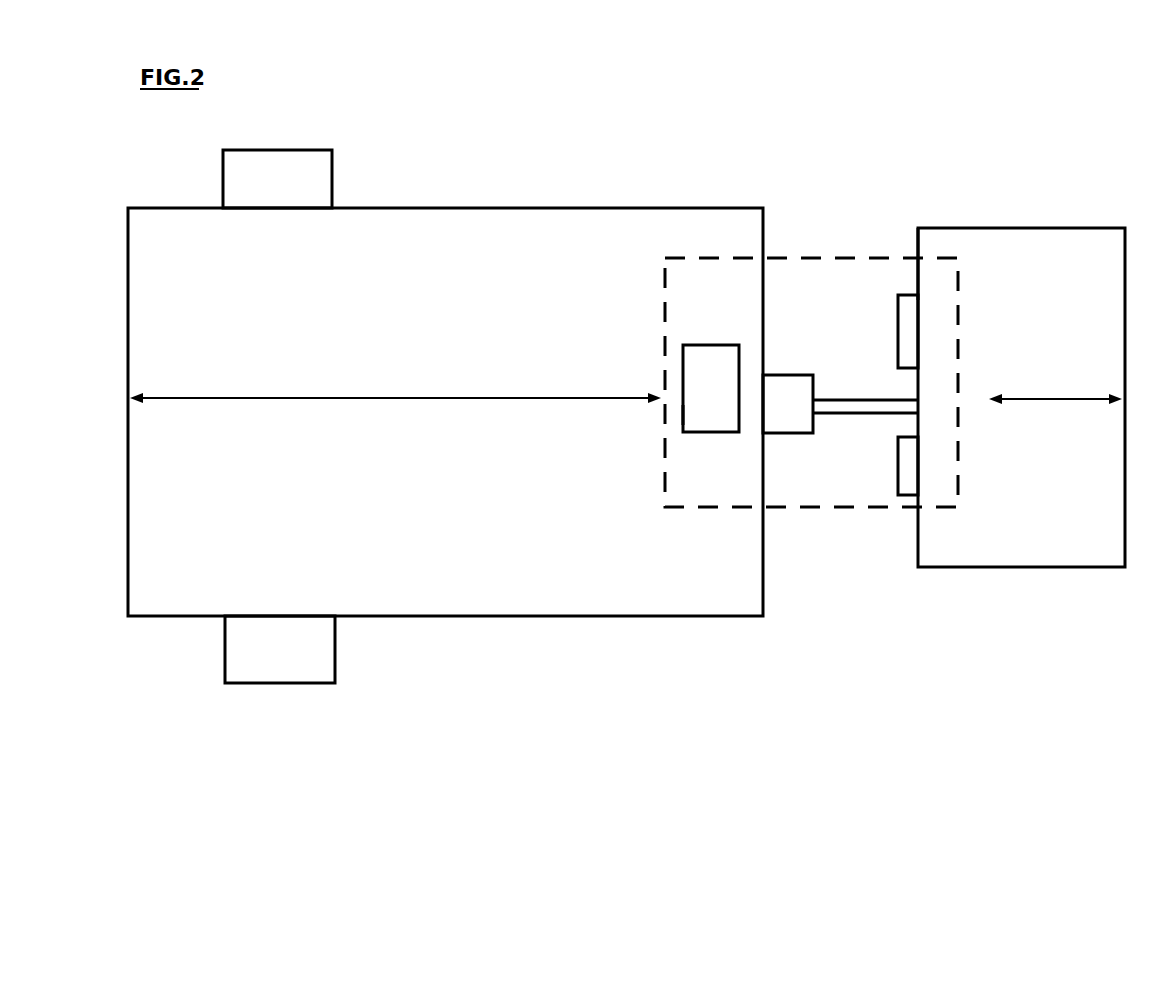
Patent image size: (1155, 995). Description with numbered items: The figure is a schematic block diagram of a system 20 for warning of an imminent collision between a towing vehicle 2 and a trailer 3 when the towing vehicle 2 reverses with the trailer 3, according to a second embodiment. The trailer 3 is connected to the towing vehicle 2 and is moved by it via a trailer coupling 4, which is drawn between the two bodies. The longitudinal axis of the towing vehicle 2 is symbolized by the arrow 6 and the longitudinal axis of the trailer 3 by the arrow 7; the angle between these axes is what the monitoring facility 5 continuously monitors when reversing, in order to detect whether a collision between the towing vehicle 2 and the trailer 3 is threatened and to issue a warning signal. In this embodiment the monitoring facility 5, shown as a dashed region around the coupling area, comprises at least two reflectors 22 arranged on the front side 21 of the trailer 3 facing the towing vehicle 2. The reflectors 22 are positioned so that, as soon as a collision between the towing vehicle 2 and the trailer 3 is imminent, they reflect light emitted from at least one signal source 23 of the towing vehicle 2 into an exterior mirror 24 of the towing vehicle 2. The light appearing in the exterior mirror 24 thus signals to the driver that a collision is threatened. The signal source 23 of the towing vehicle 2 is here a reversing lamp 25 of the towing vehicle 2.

The towing vehicle 2 is at (360, 206).
The trailer 3 is at (1007, 226).
The trailer coupling 4 is at (804, 445).
The monitoring facility 5 is at (679, 254).
The longitudinal axis of the towing vehicle 6 is at (395, 373).
The longitudinal axis of the trailer 7 is at (1055, 380).
The system 20 is at (830, 177).
The front side 21 is at (909, 226).
The reflectors 22 is at (886, 311).
The signal source 23 is at (714, 444).
The exterior mirror 24 is at (280, 685).
The reversing lamp 25 is at (684, 410).